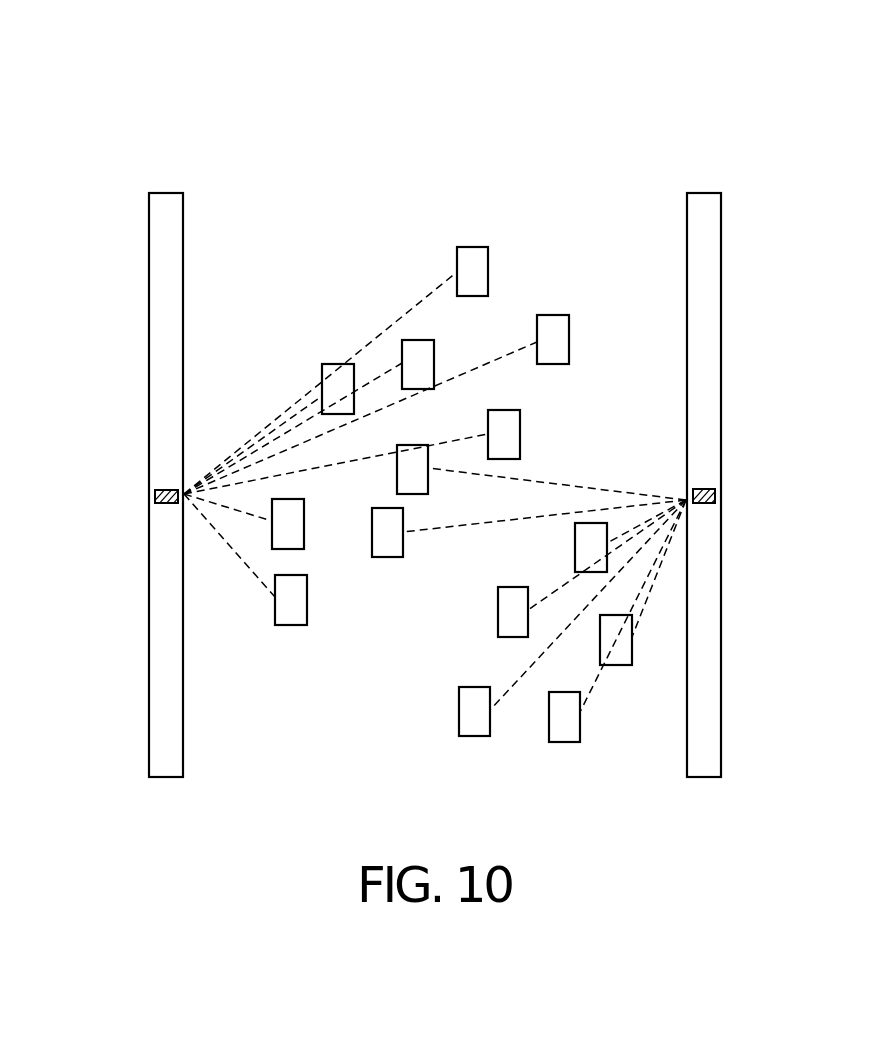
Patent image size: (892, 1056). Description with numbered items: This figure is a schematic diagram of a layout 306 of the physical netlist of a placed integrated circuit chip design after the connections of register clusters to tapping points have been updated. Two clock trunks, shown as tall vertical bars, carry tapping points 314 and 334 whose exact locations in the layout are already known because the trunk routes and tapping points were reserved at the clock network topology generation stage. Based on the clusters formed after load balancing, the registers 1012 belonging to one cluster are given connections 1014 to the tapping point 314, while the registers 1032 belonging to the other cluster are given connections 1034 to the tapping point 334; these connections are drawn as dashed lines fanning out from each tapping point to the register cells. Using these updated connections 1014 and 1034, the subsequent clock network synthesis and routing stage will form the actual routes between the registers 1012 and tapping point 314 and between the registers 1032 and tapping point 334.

The layout 306 is at (99, 61).
The tapping point 314 is at (155, 496).
The tapping point 334 is at (715, 496).
The registers 1012 is at (472, 263).
The connections 1014 is at (410, 308).
The registers 1032 is at (474, 730).
The connections 1034 is at (523, 680).